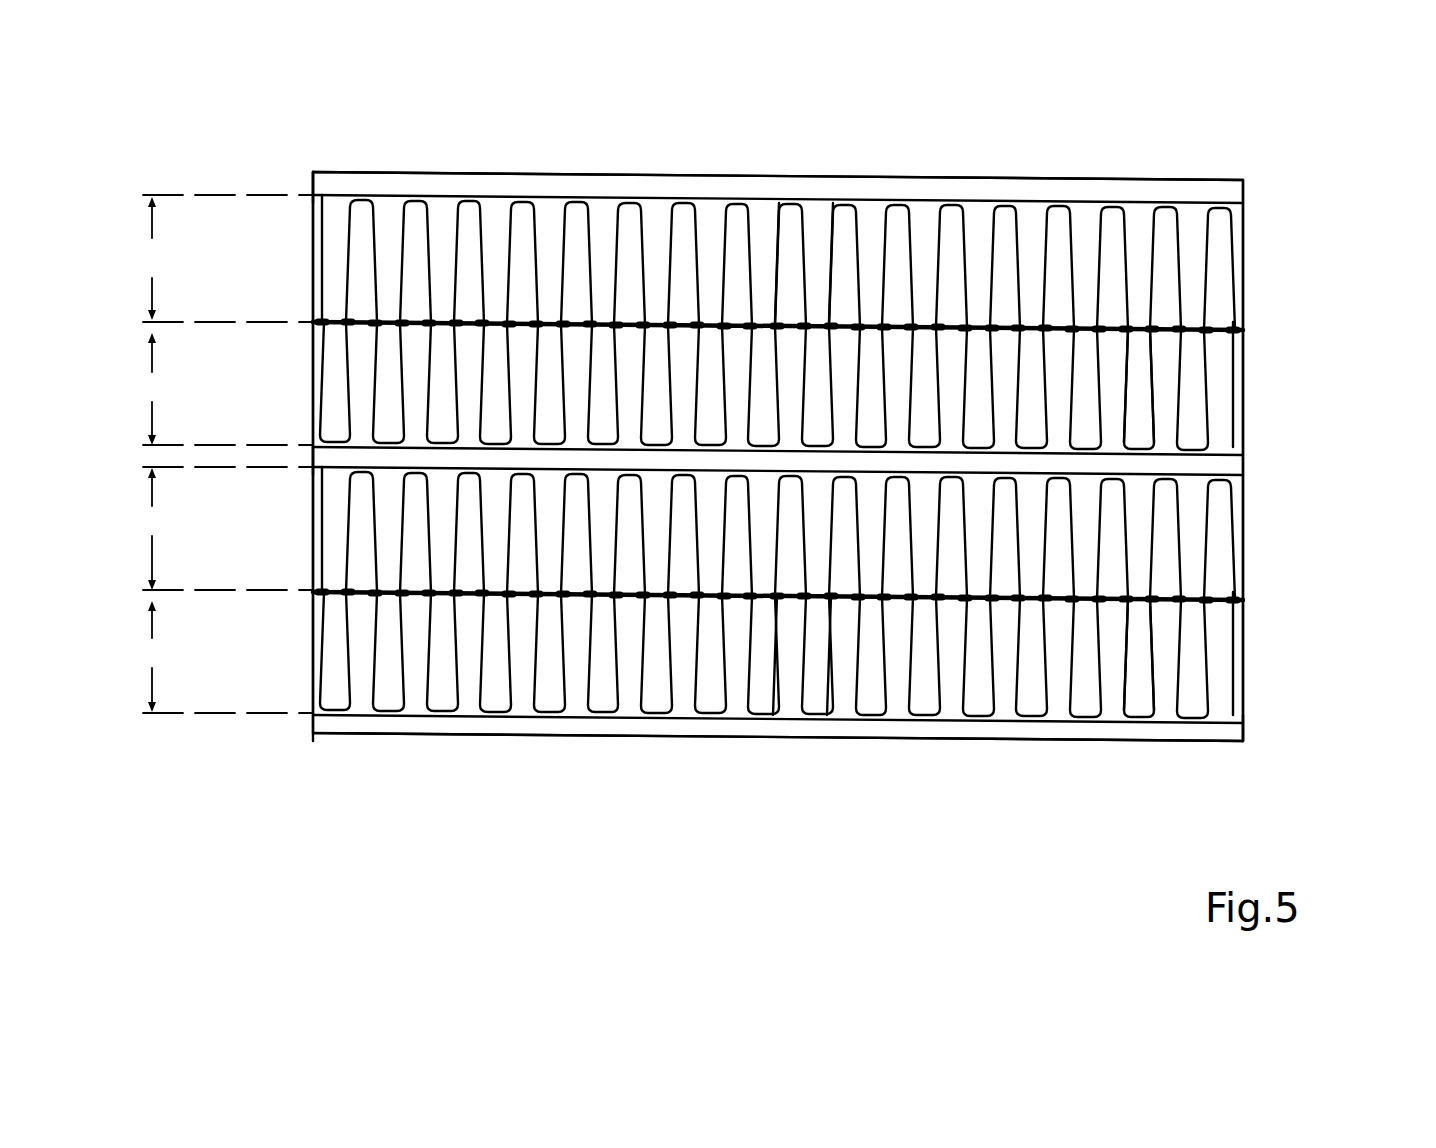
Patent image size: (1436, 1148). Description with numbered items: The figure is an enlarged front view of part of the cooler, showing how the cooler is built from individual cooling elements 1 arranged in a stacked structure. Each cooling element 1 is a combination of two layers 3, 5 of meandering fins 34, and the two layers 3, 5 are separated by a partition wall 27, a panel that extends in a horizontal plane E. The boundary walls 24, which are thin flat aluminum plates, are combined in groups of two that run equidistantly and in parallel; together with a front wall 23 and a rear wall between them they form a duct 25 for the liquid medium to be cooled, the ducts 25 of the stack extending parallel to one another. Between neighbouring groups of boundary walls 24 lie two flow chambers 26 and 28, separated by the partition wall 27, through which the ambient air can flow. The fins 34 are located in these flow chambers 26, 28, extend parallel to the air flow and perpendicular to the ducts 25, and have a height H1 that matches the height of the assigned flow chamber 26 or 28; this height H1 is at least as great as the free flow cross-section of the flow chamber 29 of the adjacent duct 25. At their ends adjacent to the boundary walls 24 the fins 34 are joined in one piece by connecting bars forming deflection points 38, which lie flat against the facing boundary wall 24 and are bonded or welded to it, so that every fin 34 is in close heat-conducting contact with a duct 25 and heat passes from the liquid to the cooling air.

The cooling element 1 is at (1220, 300).
The layer 3 is at (1247, 260).
The layer 5 is at (1247, 385).
The front wall 23 is at (1100, 188).
The boundary wall 24 is at (327, 196).
The duct 25 is at (1036, 197).
The flow chamber 26 is at (1137, 271).
The partition wall 27 is at (1193, 338).
The flow chamber 28 is at (1137, 387).
The flow chamber 29 is at (1247, 192).
The fin 34 is at (829, 255).
The deflection point 38 is at (418, 201).
The horizontal plane E is at (1247, 333).
The fin height H1 is at (228, 454).